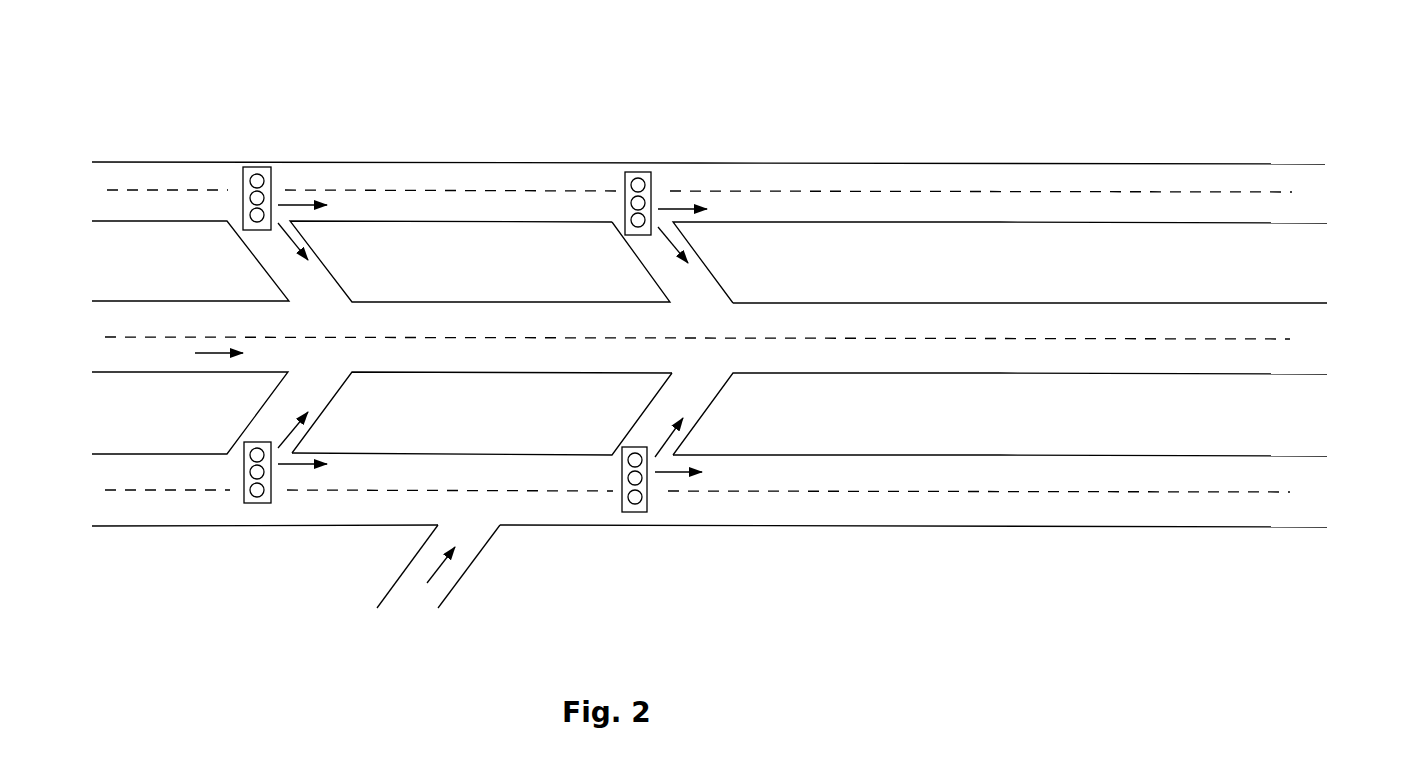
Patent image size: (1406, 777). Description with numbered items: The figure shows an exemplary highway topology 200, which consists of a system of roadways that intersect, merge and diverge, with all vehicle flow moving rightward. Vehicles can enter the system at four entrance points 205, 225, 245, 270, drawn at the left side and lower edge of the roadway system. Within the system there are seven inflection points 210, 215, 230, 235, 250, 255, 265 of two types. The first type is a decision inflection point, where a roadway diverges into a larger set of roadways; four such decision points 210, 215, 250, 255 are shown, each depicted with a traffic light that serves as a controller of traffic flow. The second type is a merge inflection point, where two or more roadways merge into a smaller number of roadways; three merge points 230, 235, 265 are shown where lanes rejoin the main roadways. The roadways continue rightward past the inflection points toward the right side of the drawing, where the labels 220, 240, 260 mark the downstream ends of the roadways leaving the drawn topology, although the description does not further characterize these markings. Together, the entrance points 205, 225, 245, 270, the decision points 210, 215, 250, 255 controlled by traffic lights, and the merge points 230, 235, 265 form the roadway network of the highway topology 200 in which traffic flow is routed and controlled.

The highway topology 200 is at (1068, 85).
The entrance point 205 is at (93, 147).
The decision point 210 is at (278, 177).
The decision point 215 is at (659, 178).
The first roadway downstream segment 220 is at (1327, 188).
The entrance point 225 is at (75, 312).
The merge point 230 is at (338, 313).
The merge point 235 is at (720, 317).
The first roadway right lane downstream 240 is at (1327, 323).
The entrance point 245 is at (70, 465).
The decision point 250 is at (322, 438).
The decision point 255 is at (698, 443).
The second roadway downstream 260 is at (1320, 480).
The merge point 265 is at (493, 473).
The entrance point 270 is at (345, 603).